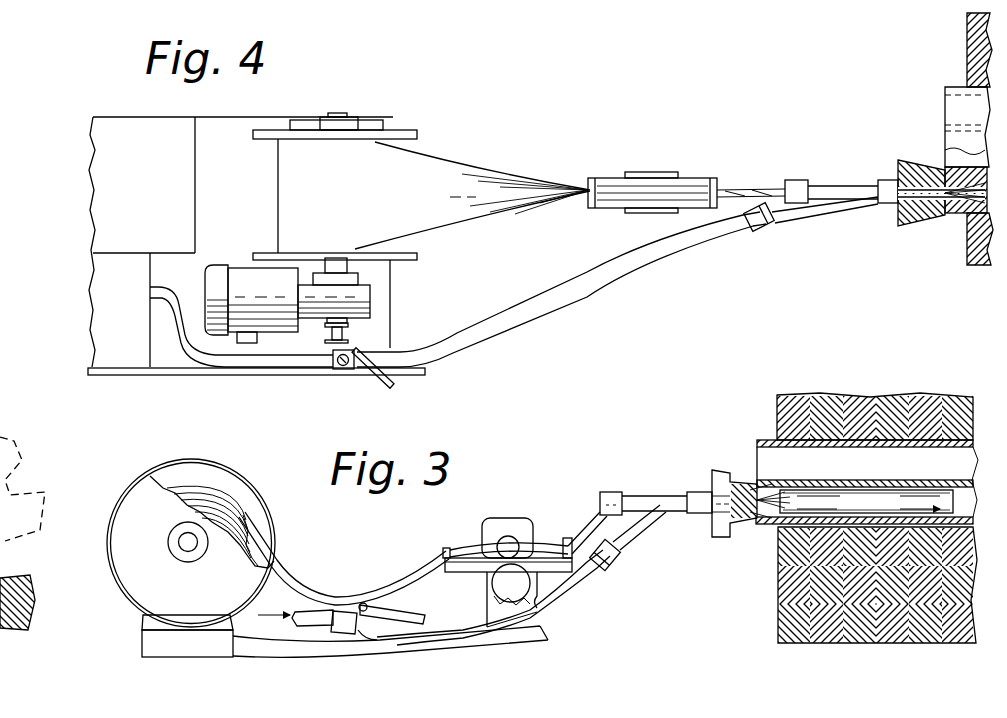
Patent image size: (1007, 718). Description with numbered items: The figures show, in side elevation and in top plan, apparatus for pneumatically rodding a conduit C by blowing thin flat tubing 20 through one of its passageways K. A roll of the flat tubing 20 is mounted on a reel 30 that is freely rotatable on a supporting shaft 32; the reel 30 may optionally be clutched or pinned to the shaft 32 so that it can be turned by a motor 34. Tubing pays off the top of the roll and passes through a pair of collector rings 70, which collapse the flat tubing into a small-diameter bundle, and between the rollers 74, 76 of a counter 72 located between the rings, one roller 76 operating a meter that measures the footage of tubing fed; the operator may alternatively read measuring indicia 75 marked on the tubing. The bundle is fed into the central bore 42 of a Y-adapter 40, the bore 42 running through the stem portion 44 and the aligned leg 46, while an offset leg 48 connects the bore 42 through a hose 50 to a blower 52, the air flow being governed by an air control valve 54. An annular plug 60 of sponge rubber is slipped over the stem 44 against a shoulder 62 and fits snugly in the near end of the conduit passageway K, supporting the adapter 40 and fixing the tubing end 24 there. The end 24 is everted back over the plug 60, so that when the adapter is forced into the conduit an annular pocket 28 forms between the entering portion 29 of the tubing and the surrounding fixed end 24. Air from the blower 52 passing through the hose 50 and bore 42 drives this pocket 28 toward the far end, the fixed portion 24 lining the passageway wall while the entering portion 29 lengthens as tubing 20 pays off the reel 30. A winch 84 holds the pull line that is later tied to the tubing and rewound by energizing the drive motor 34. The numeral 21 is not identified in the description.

In FIG. 4, the flat tubing 20 is at (442, 150).
In FIG. 4, the tubing interior 21 is at (321, 198).
In FIG. 3, the tubing end 24 is at (757, 468).
In FIG. 3, the annular pocket 28 is at (960, 503).
In FIG. 3, the entering portion of the tubing 29 is at (890, 462).
In FIG. 4, the reel 30 is at (395, 128).
In FIG. 3, the reel 30 is at (221, 474).
In FIG. 4, the supporting shaft 32 is at (340, 113).
In FIG. 3, the supporting shaft 32 is at (183, 545).
In FIG. 4, the motor 34 is at (246, 268).
In FIG. 4, the Y-adapter 40 is at (858, 208).
In FIG. 3, the Y-adapter 40 is at (646, 483).
In FIG. 3, the central bore 42 is at (748, 535).
In FIG. 4, the stem portion 44 is at (896, 182).
In FIG. 3, the stem portion 44 is at (678, 514).
In FIG. 4, the aligned leg 46 is at (818, 181).
In FIG. 3, the aligned leg 46 is at (624, 492).
In FIG. 4, the offset leg 48 is at (776, 232).
In FIG. 3, the offset leg 48 is at (625, 558).
In FIG. 4, the hose 50 is at (580, 280).
In FIG. 3, the hose 50 is at (458, 633).
In FIG. 4, the blower 52 is at (120, 366).
In FIG. 4, the air control valve 54 is at (372, 402).
In FIG. 3, the air control valve 54 is at (372, 630).
In FIG. 4, the annular plug 60 is at (911, 162).
In FIG. 3, the annular plug 60 is at (725, 469).
In FIG. 3, the shoulder 62 is at (702, 490).
In FIG. 3, the collector rings 70 is at (445, 553).
In FIG. 3, the counter 72 is at (497, 518).
In FIG. 3, the roller 74 is at (530, 545).
In FIG. 4, the measuring indicia 75 is at (420, 224).
In FIG. 3, the roller 76 is at (487, 576).
In FIG. 4, the winch 84 is at (324, 341).
In FIG. 3, the conduit C is at (938, 372).
In FIG. 3, the passageway K is at (978, 474).